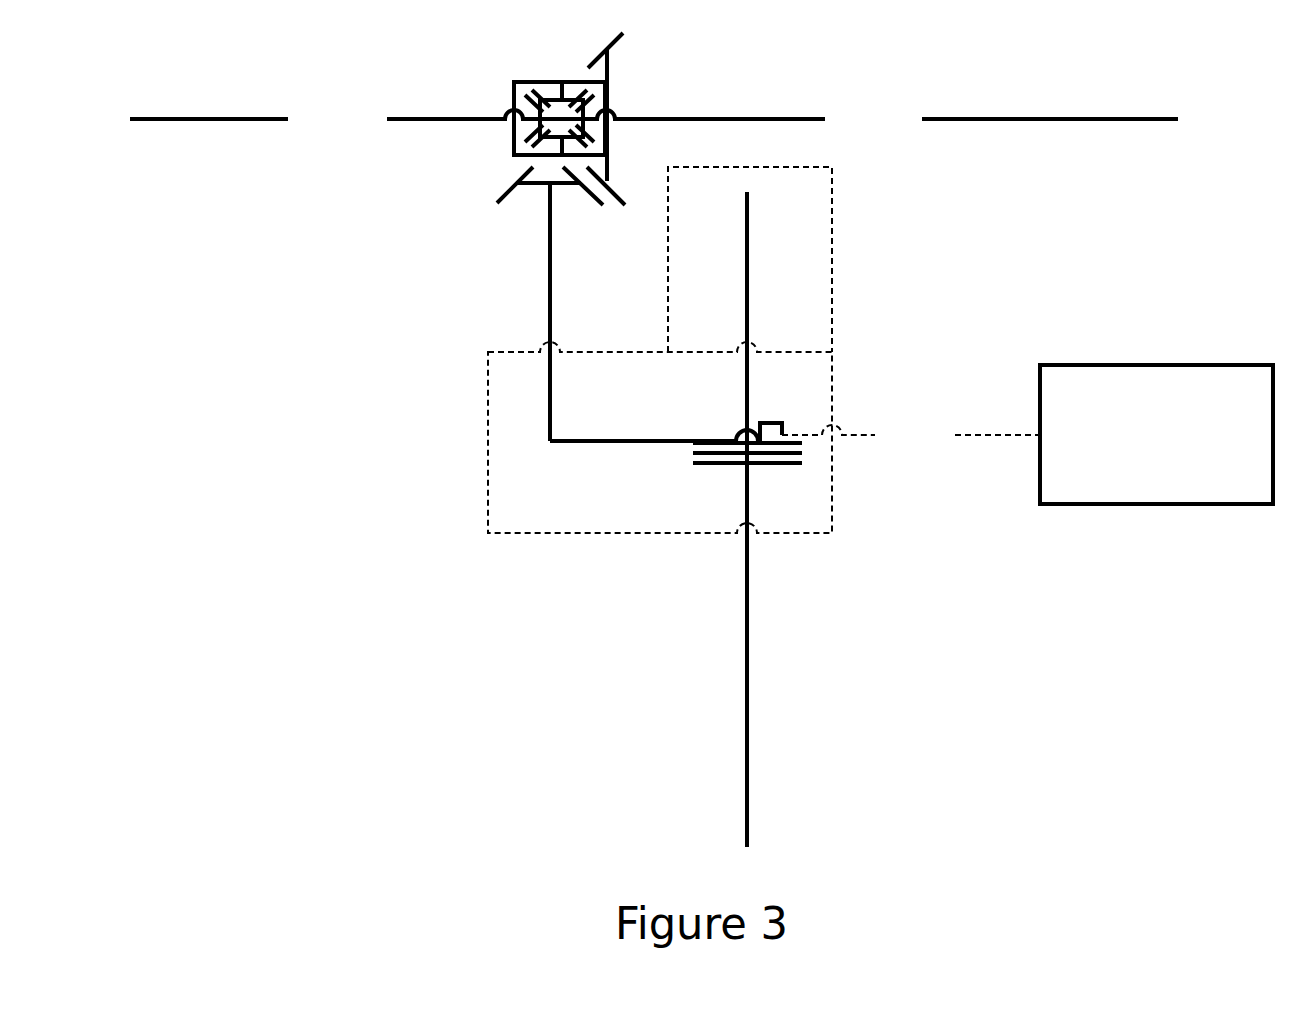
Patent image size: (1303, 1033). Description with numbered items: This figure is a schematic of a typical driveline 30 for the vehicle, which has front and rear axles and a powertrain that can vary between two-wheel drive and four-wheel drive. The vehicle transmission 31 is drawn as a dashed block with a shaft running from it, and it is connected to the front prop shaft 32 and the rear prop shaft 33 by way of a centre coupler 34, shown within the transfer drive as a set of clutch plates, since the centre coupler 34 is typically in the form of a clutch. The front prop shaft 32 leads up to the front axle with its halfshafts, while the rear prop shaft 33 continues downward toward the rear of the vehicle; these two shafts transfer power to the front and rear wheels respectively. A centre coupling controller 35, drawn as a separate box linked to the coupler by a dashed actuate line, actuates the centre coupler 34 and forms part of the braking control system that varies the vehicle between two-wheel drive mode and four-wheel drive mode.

The driveline 30 is at (412, 681).
The vehicle transmission 31 is at (817, 263).
The front prop shaft 32 is at (548, 275).
The rear prop shaft 33 is at (748, 747).
The centre coupler 34 is at (817, 497).
The centre coupling controller 35 is at (1160, 482).